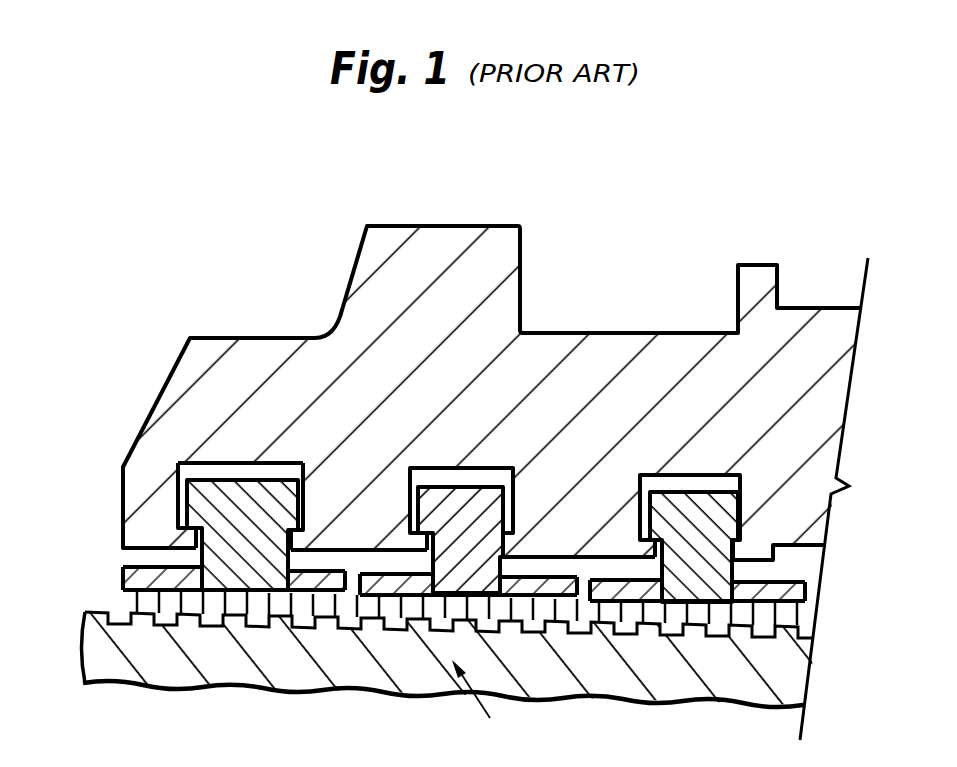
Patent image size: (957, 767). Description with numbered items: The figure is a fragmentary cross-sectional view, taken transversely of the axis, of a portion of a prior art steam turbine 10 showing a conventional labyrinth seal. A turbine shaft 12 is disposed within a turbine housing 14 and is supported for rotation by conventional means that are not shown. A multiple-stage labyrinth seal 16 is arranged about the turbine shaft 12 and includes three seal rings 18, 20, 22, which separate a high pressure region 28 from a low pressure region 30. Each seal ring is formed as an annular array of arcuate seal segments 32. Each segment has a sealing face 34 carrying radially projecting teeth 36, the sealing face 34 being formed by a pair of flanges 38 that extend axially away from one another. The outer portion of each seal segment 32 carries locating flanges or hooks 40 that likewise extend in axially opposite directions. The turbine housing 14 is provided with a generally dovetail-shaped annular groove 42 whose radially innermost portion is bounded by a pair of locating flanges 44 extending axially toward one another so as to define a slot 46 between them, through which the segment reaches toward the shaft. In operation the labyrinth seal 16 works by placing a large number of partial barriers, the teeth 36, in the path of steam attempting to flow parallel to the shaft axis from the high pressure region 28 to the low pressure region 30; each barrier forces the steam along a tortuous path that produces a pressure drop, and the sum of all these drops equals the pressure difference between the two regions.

The steam turbine 10 is at (145, 310).
The turbine shaft 12 is at (168, 682).
The turbine housing 14 is at (327, 345).
The multiple-stage labyrinth seal 16 is at (488, 703).
The seal ring 18 is at (192, 472).
The seal ring 20 is at (456, 490).
The seal ring 22 is at (668, 500).
The high pressure region 28 is at (63, 584).
The low pressure region 30 is at (805, 573).
The arcuate seal segment 32 is at (185, 500).
The sealing face 34 is at (292, 595).
The radial projecting teeth 36 is at (133, 595).
The flanges 38 is at (808, 608).
The locating flanges or hooks 40 is at (300, 500).
The dovetail-shaped annular groove 42 is at (240, 468).
The locating flanges 44 is at (190, 540).
The slot 46 is at (428, 590).